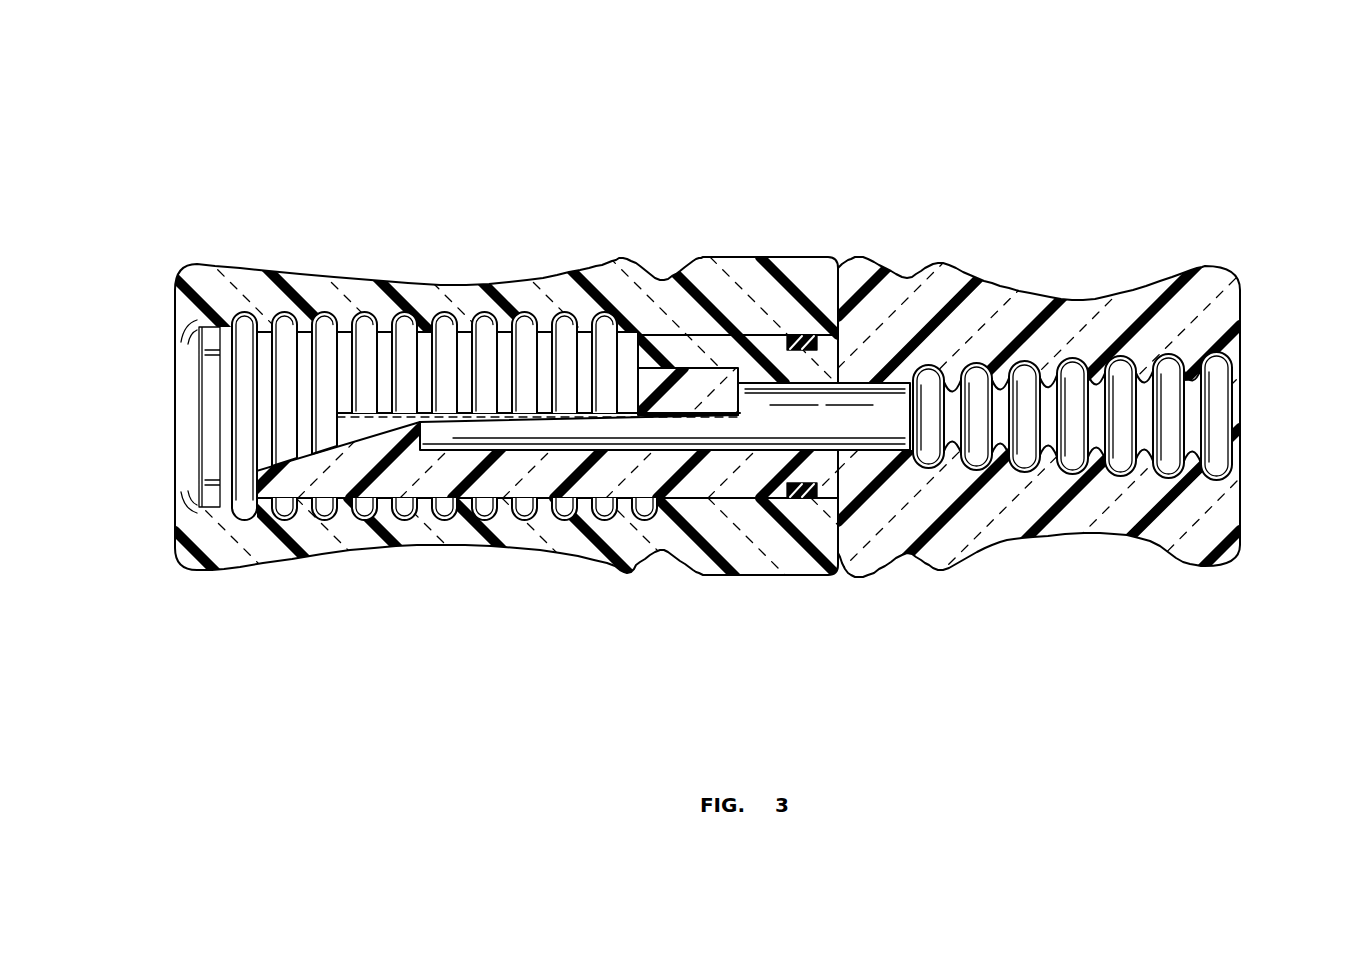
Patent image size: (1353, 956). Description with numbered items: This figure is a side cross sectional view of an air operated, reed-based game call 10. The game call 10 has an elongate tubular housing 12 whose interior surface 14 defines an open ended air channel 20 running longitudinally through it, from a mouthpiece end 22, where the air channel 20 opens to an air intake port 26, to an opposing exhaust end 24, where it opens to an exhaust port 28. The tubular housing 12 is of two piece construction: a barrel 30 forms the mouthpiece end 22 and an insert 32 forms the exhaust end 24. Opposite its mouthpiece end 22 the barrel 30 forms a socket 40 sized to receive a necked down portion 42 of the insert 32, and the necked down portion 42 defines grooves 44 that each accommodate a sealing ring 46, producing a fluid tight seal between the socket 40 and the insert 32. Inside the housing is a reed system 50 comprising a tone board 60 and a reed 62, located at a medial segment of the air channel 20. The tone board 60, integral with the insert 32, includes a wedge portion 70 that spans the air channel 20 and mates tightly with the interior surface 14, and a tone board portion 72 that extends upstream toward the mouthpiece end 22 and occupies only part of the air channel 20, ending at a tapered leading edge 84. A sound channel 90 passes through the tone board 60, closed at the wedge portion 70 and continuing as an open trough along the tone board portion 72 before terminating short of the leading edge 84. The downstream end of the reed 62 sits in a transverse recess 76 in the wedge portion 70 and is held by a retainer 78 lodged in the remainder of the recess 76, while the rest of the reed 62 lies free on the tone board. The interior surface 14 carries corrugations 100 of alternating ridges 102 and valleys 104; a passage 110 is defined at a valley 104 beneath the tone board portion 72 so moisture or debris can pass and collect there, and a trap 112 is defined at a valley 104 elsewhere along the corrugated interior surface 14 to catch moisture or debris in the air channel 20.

The game call 10 is at (308, 156).
The tubular housing 12 is at (1012, 663).
The interior surface 14 is at (202, 417).
The air channel 20 is at (703, 416).
The mouthpiece end 22 is at (245, 569).
The exhaust end 24 is at (1213, 548).
The air intake port 26 is at (196, 485).
The exhaust port 28 is at (1213, 405).
The barrel 30 is at (627, 574).
The insert 32 is at (1008, 541).
The socket 40 is at (556, 327).
The necked down portion 42 is at (750, 331).
The groove 44 is at (876, 349).
The sealing ring 46 is at (803, 333).
The reed system 50 is at (464, 436).
The tone board 60 is at (566, 504).
The reed 62 is at (505, 388).
The wedge portion 70 is at (670, 337).
The tone board portion 72 is at (487, 486).
The recess 76 is at (634, 291).
The retainer 78 is at (650, 383).
The leading edge 84 is at (324, 446).
The sound channel 90 is at (665, 416).
The corrugations 100 is at (370, 309).
The ridge 102 is at (280, 308).
The valley 104 is at (262, 325).
The passage 110 is at (443, 408).
The trap 112 is at (243, 506).